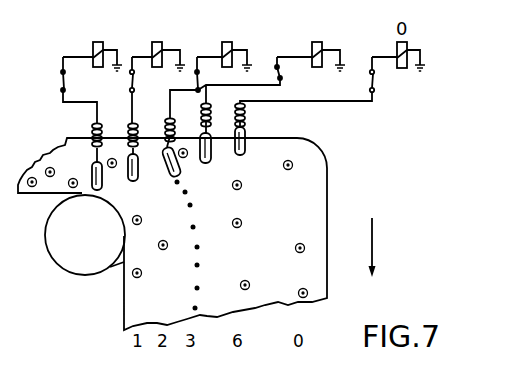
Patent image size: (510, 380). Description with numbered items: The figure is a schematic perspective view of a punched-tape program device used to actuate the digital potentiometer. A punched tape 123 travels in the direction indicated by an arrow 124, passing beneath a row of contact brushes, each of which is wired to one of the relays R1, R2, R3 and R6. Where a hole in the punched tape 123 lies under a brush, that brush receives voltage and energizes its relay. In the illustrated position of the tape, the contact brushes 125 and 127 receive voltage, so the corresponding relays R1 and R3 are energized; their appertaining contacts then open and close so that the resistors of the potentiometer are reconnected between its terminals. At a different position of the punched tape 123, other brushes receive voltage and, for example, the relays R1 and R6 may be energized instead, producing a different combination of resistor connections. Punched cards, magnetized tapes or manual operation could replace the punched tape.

The punched tape 123 is at (308, 272).
The arrow 124 is at (372, 242).
The contact brush 125 is at (103, 173).
The contact brush 127 is at (166, 148).
The relay R1 is at (91, 82).
The relay R2 is at (156, 99).
The relay R3 is at (223, 90).
The relay R6 is at (310, 48).